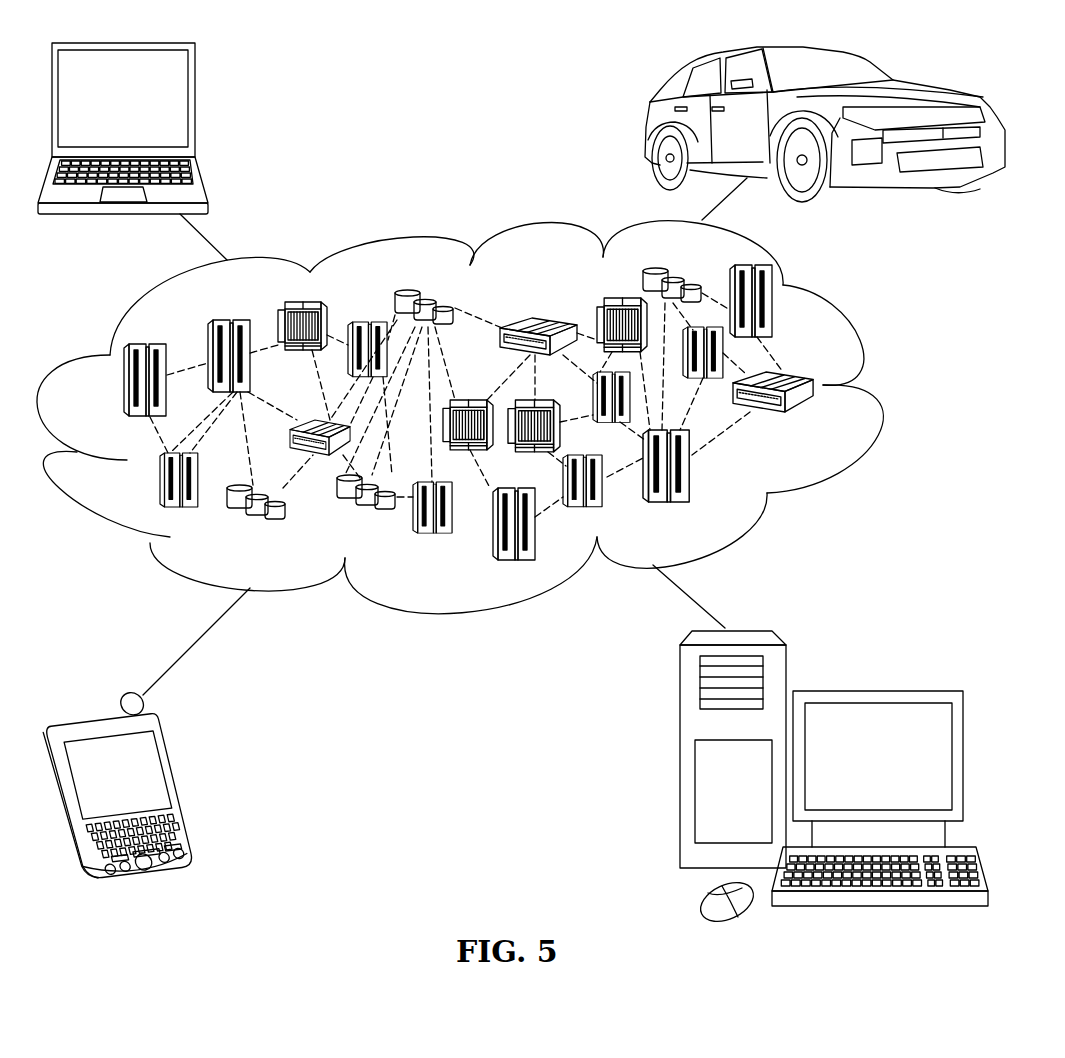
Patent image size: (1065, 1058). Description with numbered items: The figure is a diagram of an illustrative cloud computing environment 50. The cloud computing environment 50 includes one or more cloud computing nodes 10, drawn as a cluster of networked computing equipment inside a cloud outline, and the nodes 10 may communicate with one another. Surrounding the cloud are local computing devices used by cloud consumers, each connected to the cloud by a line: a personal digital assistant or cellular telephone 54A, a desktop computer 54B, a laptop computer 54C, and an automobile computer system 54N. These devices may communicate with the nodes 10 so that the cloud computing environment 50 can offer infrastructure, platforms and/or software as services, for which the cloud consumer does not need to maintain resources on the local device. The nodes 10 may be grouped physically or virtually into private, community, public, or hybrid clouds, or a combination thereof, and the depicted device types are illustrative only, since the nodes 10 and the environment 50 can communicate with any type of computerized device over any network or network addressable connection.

The cloud computing node 10 is at (826, 424).
The cloud computing environment 50 is at (490, 417).
The personal digital assistant or cellular telephone 54A is at (184, 788).
The desktop computer 54B is at (875, 690).
The laptop computer 54C is at (196, 107).
The automobile computer system 54N is at (648, 122).